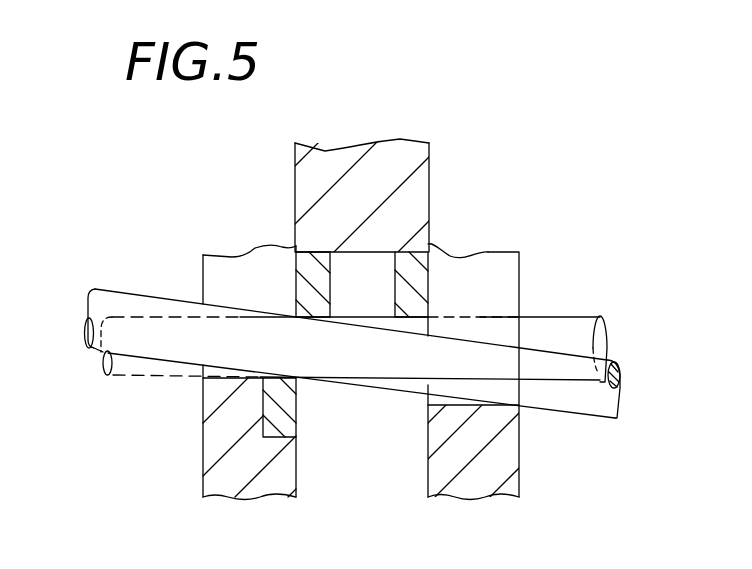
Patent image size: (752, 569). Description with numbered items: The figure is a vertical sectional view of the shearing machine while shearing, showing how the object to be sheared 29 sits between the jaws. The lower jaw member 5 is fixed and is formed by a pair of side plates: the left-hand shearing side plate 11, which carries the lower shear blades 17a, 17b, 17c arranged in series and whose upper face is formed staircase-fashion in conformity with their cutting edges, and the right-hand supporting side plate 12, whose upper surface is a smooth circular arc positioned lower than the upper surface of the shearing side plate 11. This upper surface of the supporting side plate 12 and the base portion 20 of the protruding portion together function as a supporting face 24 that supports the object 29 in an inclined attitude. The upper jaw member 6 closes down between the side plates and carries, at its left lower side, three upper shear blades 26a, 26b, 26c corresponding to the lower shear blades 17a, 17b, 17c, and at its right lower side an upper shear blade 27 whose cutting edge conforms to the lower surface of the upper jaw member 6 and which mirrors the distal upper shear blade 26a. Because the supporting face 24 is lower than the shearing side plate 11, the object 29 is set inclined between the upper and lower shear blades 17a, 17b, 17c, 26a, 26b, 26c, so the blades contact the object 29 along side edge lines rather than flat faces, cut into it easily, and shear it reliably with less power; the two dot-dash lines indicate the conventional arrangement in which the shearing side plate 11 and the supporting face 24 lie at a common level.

The lower jaw member 5 is at (135, 403).
The upper jaw member 6 is at (432, 142).
The shearing side plate 11 is at (213, 478).
The supporting side plate 12 is at (553, 250).
The base portion 20 is at (502, 468).
The lower shear blade 17a is at (352, 465).
The lower shear blade 17b is at (352, 465).
The lower shear blade 17c is at (287, 400).
The supporting face 24 is at (457, 407).
The upper shear blade 26a is at (276, 237).
The upper shear blade 26b is at (276, 237).
The upper shear blade 26c is at (306, 290).
The upper shear blade 27 is at (428, 265).
The object to be sheared 29 is at (120, 304).